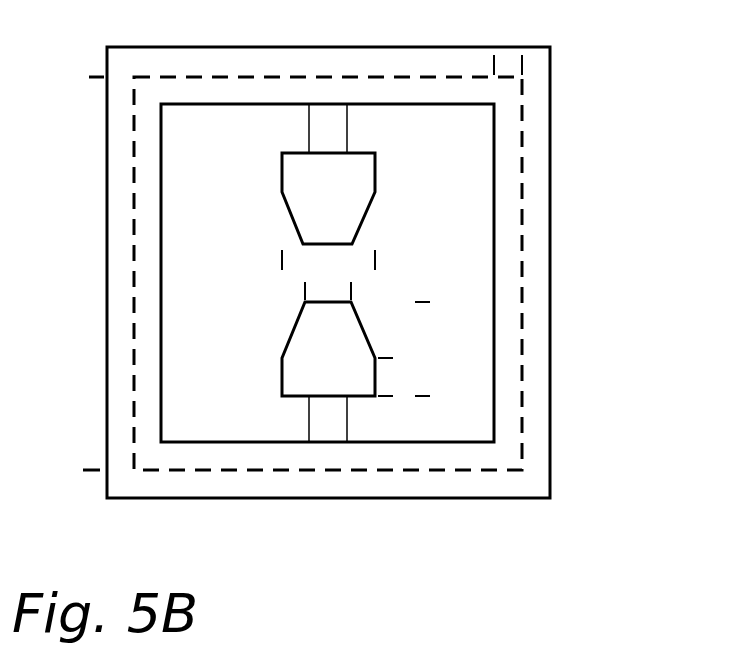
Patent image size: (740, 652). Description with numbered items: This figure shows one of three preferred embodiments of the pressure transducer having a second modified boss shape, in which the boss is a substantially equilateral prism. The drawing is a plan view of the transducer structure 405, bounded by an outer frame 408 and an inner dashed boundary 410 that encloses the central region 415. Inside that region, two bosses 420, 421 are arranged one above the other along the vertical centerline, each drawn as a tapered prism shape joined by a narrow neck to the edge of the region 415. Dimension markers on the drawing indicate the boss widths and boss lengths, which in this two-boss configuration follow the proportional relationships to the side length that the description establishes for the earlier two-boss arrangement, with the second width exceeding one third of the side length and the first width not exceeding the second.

The semiconductor device layout (405') 405 is at (367, 272).
The outer boundary / scribe line edge (408') 408 is at (533, 307).
The dashed boundary region, cut width (410') 410 is at (508, 170).
The inner active region (415') 415 is at (250, 181).
The upper tapered bonding element (420') 420 is at (290, 212).
The lower tapered bonding element (421') 421 is at (287, 352).